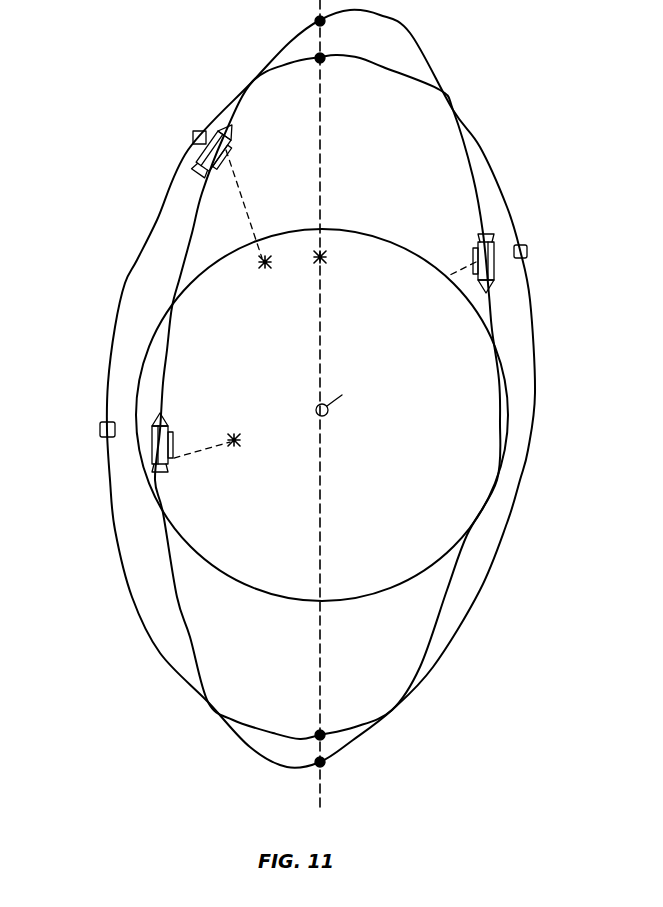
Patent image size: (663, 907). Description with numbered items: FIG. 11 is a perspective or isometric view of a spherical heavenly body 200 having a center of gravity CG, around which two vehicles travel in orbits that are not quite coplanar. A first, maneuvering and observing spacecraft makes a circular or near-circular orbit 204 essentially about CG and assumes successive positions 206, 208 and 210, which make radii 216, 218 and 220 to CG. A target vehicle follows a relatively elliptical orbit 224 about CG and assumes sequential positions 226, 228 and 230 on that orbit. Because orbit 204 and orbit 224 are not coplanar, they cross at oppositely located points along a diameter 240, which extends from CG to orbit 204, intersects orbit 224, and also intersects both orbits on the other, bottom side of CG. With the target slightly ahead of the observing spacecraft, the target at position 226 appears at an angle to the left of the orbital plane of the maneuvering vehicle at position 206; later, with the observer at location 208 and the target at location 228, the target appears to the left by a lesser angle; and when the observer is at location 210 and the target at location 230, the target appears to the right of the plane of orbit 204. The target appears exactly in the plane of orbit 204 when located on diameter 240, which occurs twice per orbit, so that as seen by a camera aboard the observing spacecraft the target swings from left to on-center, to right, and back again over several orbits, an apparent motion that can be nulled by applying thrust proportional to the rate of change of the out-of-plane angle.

The spherical heavenly body 200 is at (400, 246).
The orbit 204 is at (411, 33).
The first position of first spacecraft 206 is at (173, 468).
The second position of first spacecraft 208 is at (230, 138).
The third position of first spacecraft 210 is at (498, 272).
The radius 216 is at (200, 447).
The radius 218 is at (254, 197).
The radius 220 is at (467, 256).
The elliptical orbit 224 is at (482, 148).
The first position of target vehicle 226 is at (101, 431).
The second position of target vehicle 228 is at (192, 138).
The third position of target vehicle 230 is at (528, 252).
The diameter 240 is at (322, 90).